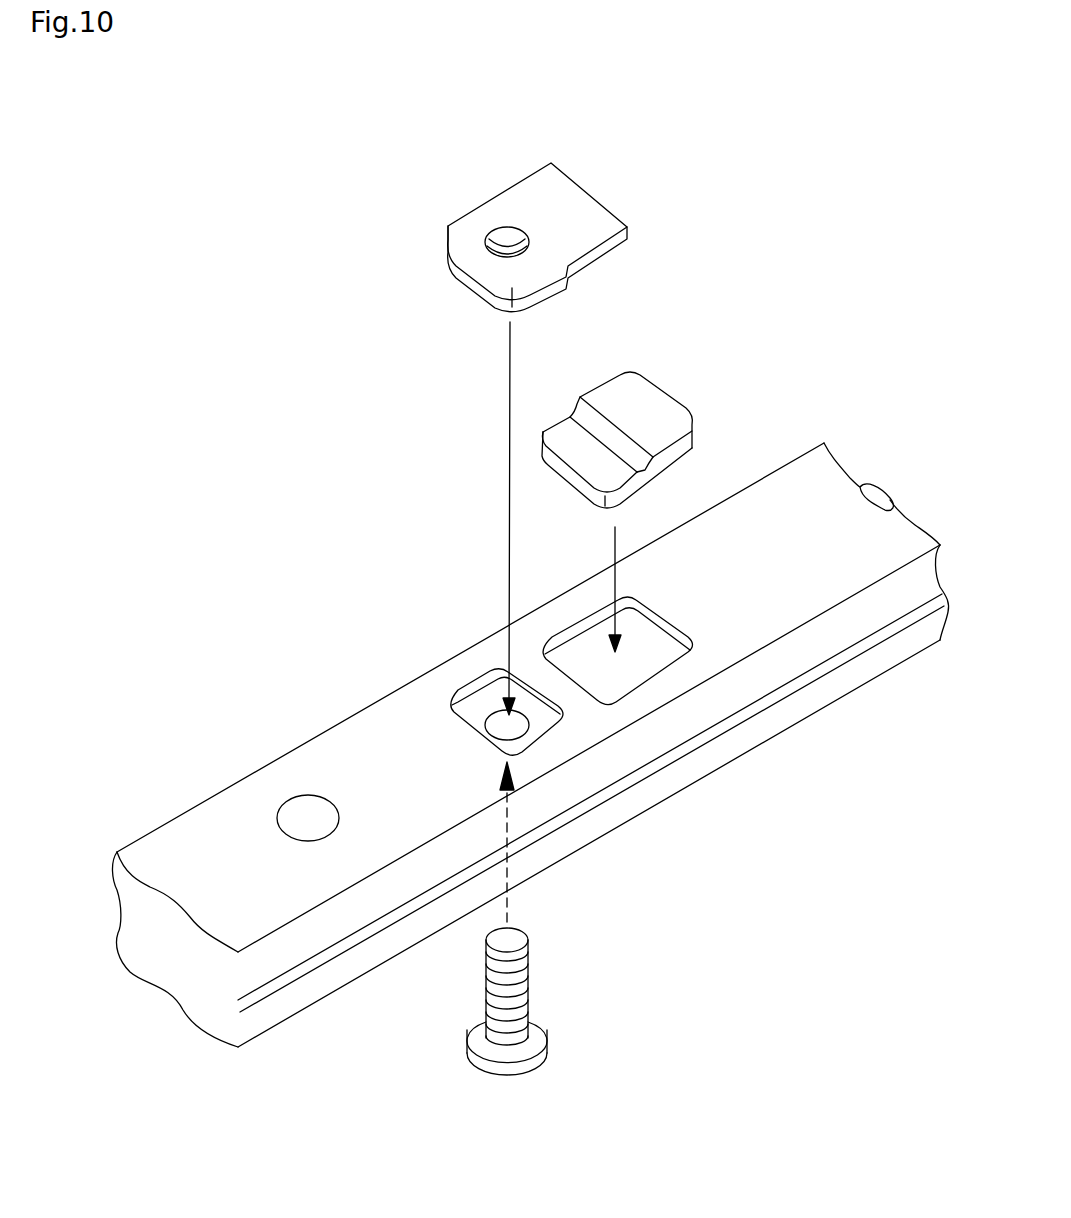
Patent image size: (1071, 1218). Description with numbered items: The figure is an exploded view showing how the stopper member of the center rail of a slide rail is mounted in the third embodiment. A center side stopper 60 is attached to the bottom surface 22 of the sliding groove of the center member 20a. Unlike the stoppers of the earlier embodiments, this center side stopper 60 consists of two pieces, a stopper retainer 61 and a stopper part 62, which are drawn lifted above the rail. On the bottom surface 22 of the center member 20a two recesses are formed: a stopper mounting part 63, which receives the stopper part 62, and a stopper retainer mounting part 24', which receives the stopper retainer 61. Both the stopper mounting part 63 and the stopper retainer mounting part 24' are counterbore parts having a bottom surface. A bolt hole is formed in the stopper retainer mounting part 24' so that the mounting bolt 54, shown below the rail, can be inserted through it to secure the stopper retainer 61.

The center member 20a is at (820, 493).
The bottom surface 22 is at (365, 747).
The stopper retainer mounting part 24' is at (498, 671).
The mounting bolt 54 is at (523, 1063).
The center side stopper 60 is at (763, 172).
The stopper retainer 61 is at (577, 200).
The stopper part 62 is at (643, 400).
The stopper mounting part 63 is at (653, 647).